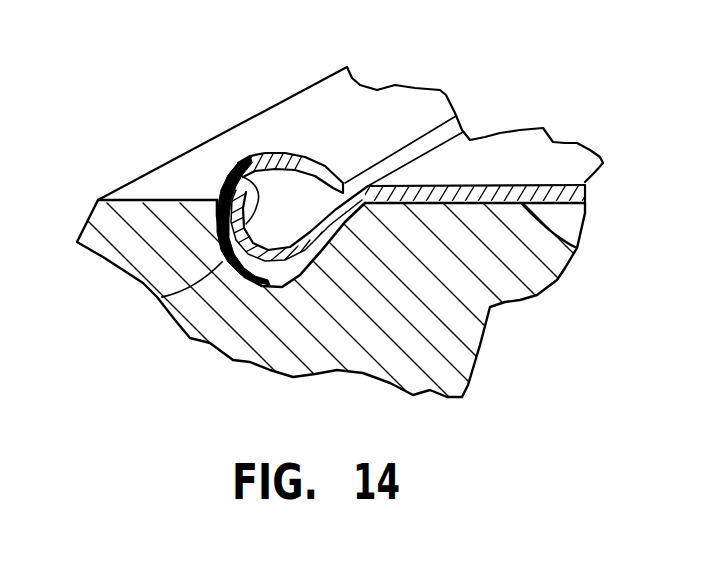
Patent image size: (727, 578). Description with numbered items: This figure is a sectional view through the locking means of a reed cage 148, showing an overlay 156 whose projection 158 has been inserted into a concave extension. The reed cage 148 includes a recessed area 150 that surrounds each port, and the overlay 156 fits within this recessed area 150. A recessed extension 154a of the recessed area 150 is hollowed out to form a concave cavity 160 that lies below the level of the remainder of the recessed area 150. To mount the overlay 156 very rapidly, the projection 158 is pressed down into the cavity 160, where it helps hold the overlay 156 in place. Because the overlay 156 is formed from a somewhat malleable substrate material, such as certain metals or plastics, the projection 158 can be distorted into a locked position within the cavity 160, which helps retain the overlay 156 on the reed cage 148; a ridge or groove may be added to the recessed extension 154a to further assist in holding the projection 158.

The reed cage 148 is at (103, 215).
The recessed area 150 is at (578, 248).
The recessed extension 154a is at (333, 133).
The overlay 156 is at (543, 157).
The projection 158 is at (243, 179).
The concave cavity 160 is at (162, 297).